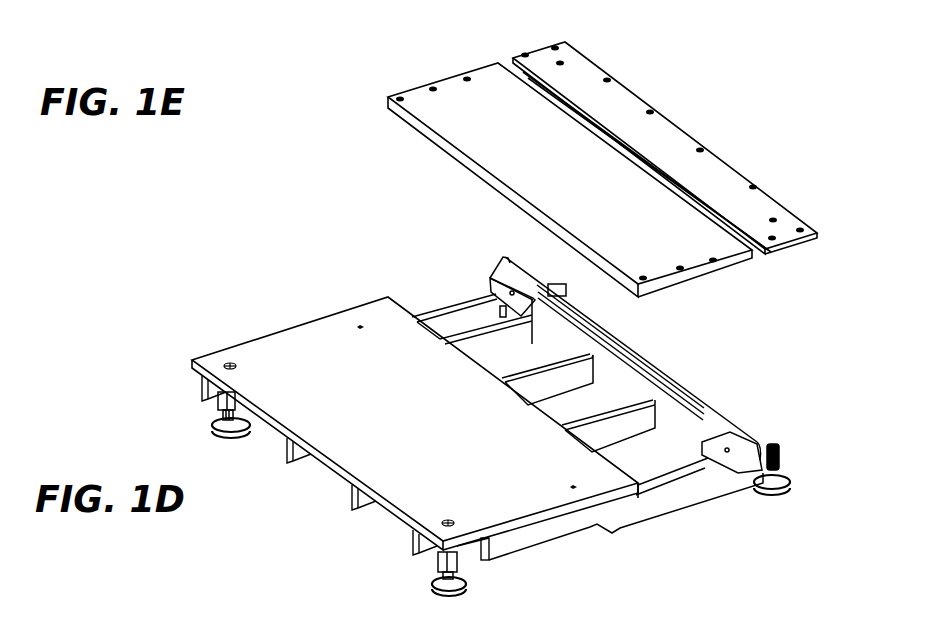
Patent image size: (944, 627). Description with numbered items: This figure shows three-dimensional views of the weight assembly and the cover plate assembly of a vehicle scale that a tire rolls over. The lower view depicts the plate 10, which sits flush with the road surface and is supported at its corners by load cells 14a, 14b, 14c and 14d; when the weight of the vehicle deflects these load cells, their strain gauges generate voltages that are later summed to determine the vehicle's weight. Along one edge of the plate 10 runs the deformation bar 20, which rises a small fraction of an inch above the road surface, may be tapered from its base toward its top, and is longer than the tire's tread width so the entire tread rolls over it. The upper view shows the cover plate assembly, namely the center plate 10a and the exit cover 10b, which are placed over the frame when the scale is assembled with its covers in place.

In FIG. 1D, the plate 10 is at (435, 448).
In FIG. 1E, the center plate 10a is at (618, 201).
In FIG. 1E, the exit cover 10b is at (665, 148).
In FIG. 1D, the load cell 14a is at (218, 408).
In FIG. 1D, the load cell 14b is at (465, 560).
In FIG. 1D, the load cell 14c is at (793, 463).
In FIG. 1D, the load cell 14d is at (608, 328).
In FIG. 1D, the deformation bar 20 is at (643, 358).